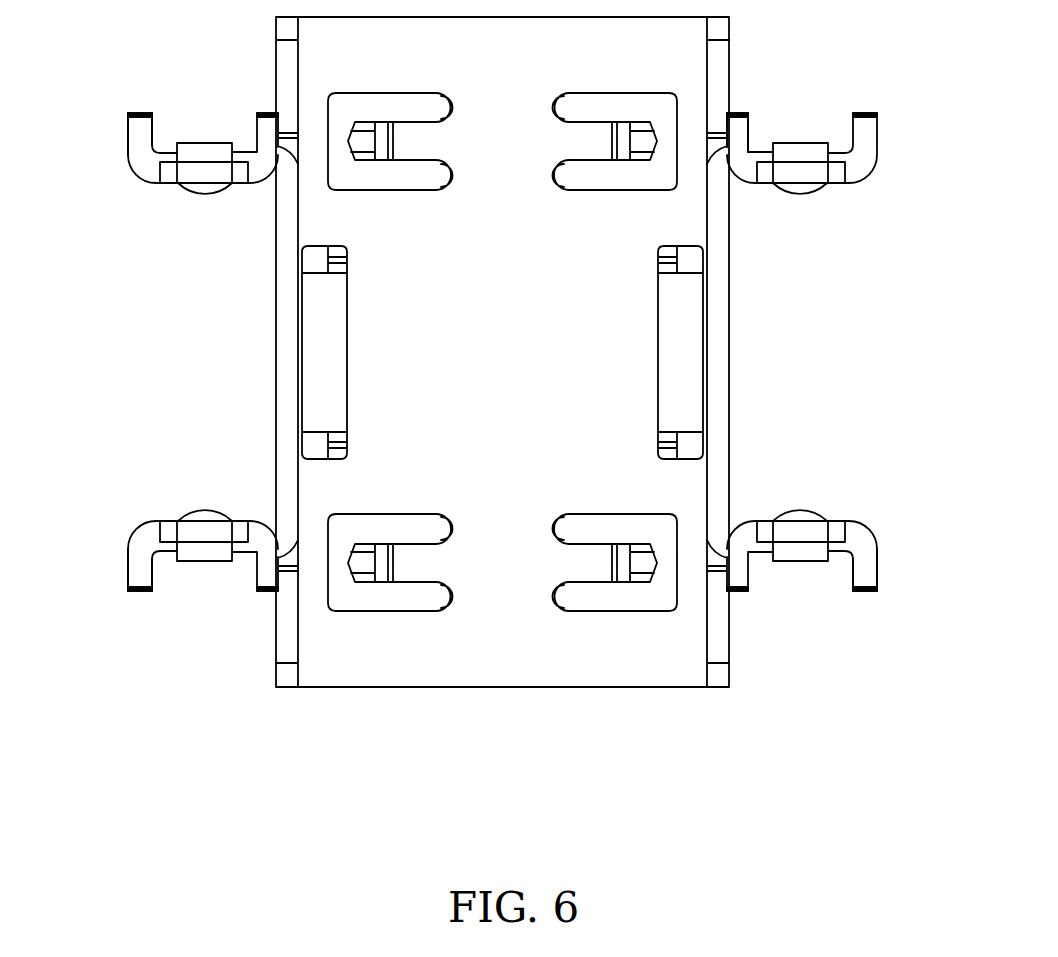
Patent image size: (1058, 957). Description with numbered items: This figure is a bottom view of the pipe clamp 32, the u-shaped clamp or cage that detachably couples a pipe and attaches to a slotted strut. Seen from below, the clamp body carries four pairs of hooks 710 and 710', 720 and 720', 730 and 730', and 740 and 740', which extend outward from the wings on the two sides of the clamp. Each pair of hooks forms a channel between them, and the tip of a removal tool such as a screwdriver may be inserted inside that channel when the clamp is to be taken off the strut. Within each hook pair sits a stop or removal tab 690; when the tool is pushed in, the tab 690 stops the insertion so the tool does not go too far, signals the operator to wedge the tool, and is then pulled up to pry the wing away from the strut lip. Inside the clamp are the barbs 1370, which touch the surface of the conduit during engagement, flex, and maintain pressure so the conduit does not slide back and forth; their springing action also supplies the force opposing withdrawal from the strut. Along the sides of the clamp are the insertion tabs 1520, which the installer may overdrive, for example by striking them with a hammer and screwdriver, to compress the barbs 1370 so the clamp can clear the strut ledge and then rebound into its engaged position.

The pipe clamp 32 is at (505, 778).
The removal tab 690 is at (205, 147).
The hook 710 is at (213, 563).
The hook 710' is at (98, 569).
The hook 720 is at (792, 558).
The hook 720' is at (907, 570).
The hook 730 is at (213, 105).
The hook 730' is at (98, 134).
The hook 740 is at (832, 148).
The hook 740' is at (767, 90).
The barb 1370 is at (388, 100).
The insertion tab 1520 is at (320, 363).